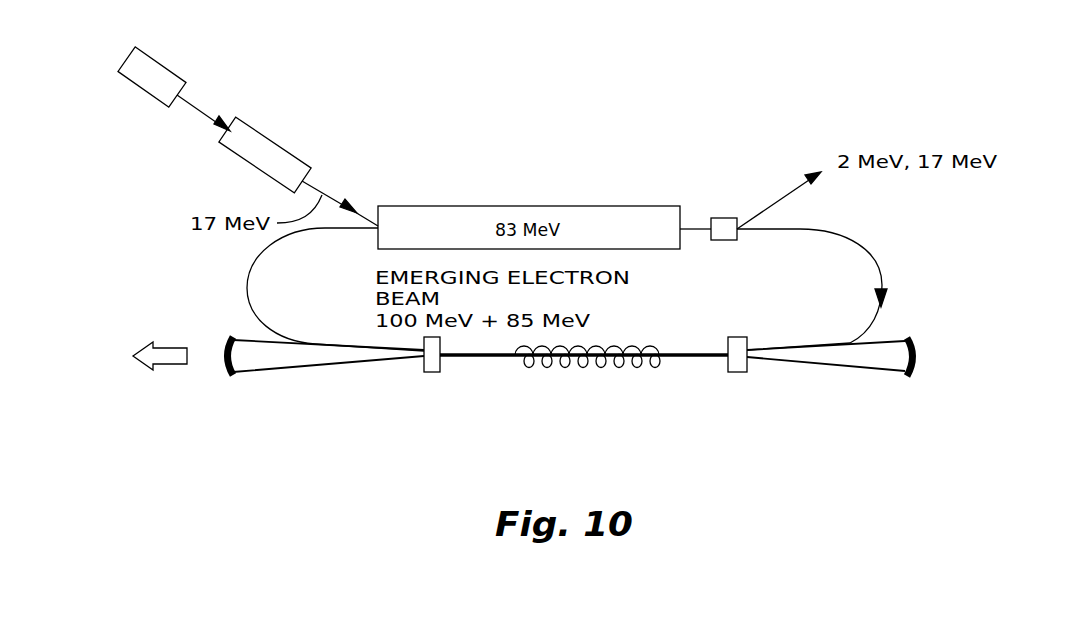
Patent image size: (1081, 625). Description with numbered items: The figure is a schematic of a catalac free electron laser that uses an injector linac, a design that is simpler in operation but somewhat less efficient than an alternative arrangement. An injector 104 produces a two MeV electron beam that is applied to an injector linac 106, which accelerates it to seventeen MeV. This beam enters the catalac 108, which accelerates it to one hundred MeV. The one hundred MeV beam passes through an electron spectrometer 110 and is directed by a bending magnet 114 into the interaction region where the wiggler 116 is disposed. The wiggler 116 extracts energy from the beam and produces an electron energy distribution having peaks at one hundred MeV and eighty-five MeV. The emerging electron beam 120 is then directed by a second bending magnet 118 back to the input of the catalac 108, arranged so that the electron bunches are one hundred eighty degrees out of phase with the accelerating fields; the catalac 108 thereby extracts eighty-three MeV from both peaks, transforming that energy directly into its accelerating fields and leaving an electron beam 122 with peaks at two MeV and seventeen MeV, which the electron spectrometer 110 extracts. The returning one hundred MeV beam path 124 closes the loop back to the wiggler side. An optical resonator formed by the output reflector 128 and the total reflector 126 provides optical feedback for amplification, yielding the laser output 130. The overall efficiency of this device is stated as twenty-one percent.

The injector 104 is at (160, 63).
The injector linac 106 is at (287, 150).
The catalac 108 is at (477, 207).
The electron spectrometer 110 is at (722, 217).
The bending magnet 114 is at (735, 372).
The wiggler 116 is at (560, 366).
The bending magnet 118 is at (430, 372).
The emerging electron beam 120 is at (262, 260).
The electron beam 122 is at (702, 227).
The return beam path 124 is at (882, 275).
The total reflector 126 is at (914, 376).
The output reflector 128 is at (228, 378).
The laser output 130 is at (147, 369).